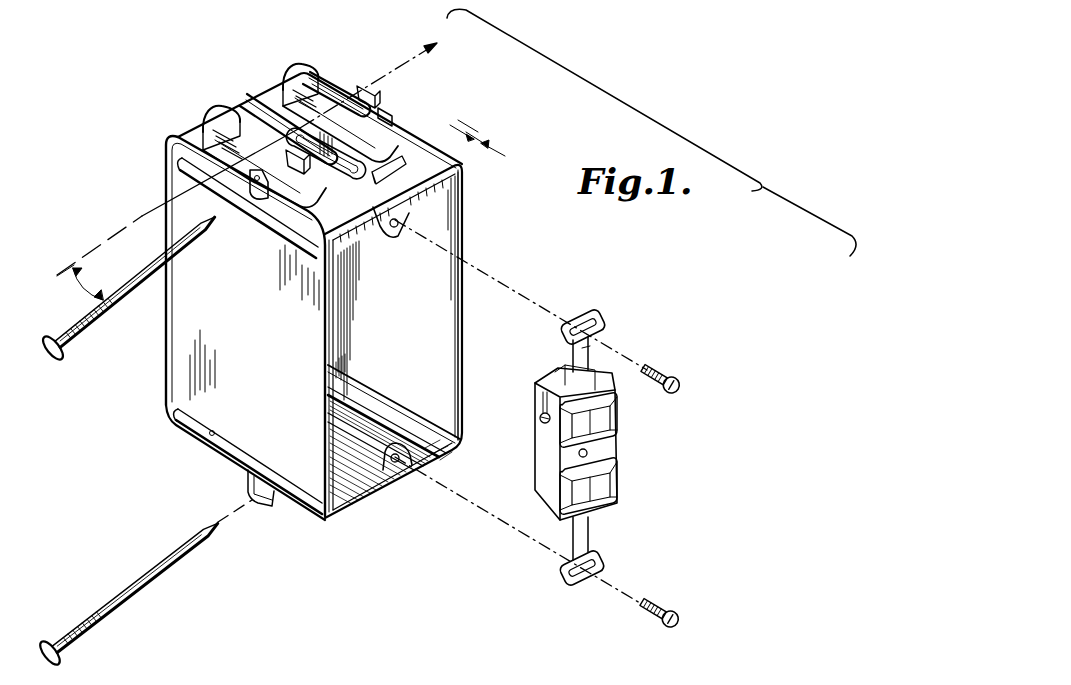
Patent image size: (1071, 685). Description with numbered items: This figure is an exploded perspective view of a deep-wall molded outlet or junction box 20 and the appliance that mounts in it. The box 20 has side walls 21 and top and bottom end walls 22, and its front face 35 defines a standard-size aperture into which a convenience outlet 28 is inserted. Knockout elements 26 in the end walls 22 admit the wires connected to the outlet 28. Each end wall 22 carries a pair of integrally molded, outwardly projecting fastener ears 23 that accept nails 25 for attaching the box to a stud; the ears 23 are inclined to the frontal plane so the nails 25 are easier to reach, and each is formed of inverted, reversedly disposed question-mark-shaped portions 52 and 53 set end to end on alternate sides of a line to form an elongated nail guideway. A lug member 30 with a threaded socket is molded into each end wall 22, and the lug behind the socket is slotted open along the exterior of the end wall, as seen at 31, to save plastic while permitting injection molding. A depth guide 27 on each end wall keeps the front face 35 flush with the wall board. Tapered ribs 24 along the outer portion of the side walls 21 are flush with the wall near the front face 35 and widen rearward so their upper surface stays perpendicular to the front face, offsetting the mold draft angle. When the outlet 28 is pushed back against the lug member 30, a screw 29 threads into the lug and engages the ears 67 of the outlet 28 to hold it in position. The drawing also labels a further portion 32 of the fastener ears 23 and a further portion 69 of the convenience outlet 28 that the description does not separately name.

The outlet box 20 is at (144, 403).
The side walls 21 is at (192, 350).
The end walls 22 is at (400, 163).
The fastener ears 23 is at (378, 104).
The tapered ribs 24 is at (180, 183).
The nails 25 is at (198, 248).
The knockout elements 26 is at (274, 117).
The depth guide 27 is at (453, 128).
The convenience outlet 28 is at (606, 443).
The screw 29 is at (662, 371).
The lug member 30 is at (406, 215).
The slot 31 is at (339, 152).
The rounded hump of clip 32 is at (201, 122).
The front face 35 is at (325, 327).
The question-mark-shaped portion 52 is at (262, 202).
The question-mark-shaped portion 53 is at (246, 96).
The ears 67 is at (602, 333).
The mounting straps 69 is at (586, 350).